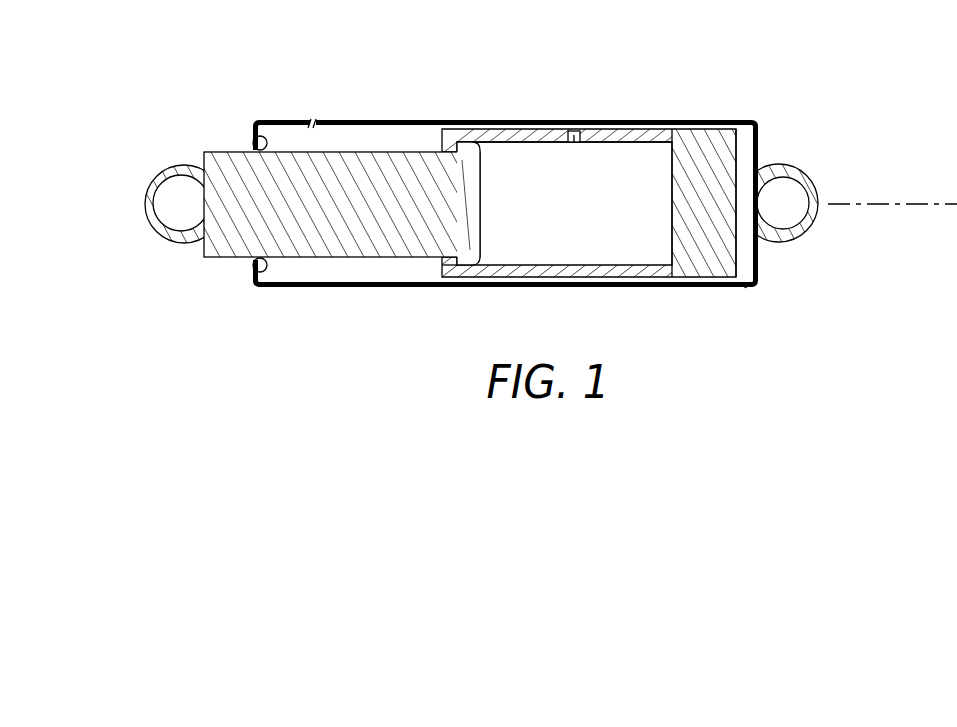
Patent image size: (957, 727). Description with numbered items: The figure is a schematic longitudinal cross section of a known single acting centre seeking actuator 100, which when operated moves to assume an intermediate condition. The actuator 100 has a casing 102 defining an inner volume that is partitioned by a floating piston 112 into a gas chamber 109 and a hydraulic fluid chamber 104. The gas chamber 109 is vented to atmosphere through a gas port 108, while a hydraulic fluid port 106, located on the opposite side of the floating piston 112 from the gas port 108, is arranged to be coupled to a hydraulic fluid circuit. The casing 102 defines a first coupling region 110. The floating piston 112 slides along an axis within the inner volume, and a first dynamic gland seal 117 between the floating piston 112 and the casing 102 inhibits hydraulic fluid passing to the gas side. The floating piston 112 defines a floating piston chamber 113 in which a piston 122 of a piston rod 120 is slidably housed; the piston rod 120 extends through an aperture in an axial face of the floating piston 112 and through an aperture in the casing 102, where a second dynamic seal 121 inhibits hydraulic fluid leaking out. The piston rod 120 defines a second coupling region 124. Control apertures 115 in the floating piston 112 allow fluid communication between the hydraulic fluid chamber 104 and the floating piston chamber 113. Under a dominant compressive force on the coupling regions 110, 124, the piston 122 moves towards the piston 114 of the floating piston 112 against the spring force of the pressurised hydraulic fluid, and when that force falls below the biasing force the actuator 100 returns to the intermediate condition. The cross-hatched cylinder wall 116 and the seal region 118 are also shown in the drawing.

The centre seeking actuator 100 is at (782, 77).
The casing 102 is at (508, 130).
The hydraulic fluid chamber 104 is at (400, 133).
The hydraulic fluid port 106 is at (314, 121).
The gas port 108 is at (746, 287).
The gas chamber 109 is at (750, 262).
The first coupling region 110 is at (790, 170).
The floating piston 112 is at (525, 284).
The floating piston chamber 113 is at (595, 245).
The piston 114 is at (684, 263).
The control apertures 115 is at (571, 135).
The cylinder wall 116 is at (630, 137).
The first dynamic gland seal 117 is at (698, 140).
The seal 118 is at (440, 270).
The piston rod 120 is at (302, 244).
The second dynamic seal 121 is at (256, 140).
The piston 122 is at (483, 205).
The second coupling region 124 is at (143, 203).